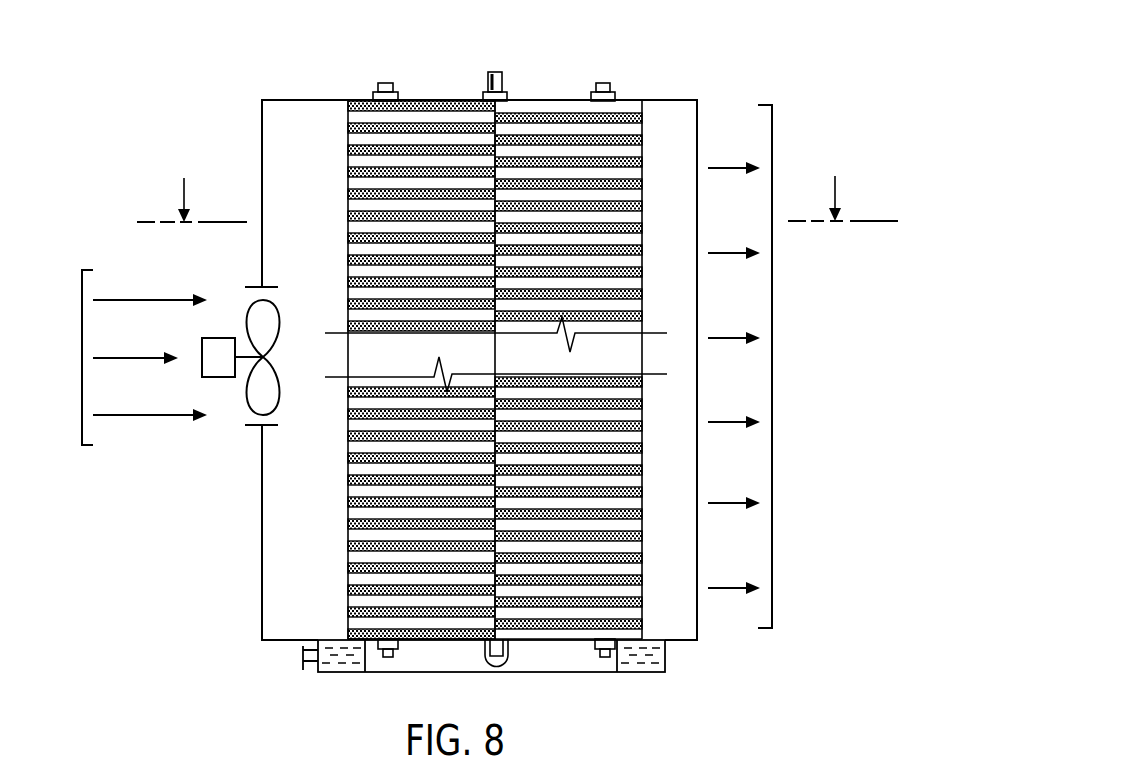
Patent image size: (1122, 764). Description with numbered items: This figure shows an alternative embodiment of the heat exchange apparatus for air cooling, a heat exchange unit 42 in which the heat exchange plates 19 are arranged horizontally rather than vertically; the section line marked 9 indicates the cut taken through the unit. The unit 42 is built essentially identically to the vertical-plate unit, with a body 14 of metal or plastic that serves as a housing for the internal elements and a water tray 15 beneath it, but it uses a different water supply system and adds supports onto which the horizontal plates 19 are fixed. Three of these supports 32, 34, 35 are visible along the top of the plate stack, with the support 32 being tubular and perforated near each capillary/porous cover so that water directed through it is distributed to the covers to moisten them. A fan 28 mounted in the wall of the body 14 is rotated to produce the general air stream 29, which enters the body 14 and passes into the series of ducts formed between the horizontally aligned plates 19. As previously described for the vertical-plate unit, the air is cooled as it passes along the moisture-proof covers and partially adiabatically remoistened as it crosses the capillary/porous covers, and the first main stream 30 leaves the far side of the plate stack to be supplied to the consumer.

The heat exchange unit 42 is at (772, 33).
The body 14 is at (263, 513).
The water tray 15 is at (343, 665).
The heat exchange plates 19 is at (367, 553).
The fan 28 is at (262, 400).
The general air stream 29 is at (82, 358).
The first main stream 30 is at (772, 365).
The support 32 is at (494, 72).
The support 34 is at (385, 83).
The support 35 is at (605, 83).
The section line for FIG. 9 is at (517, 186).